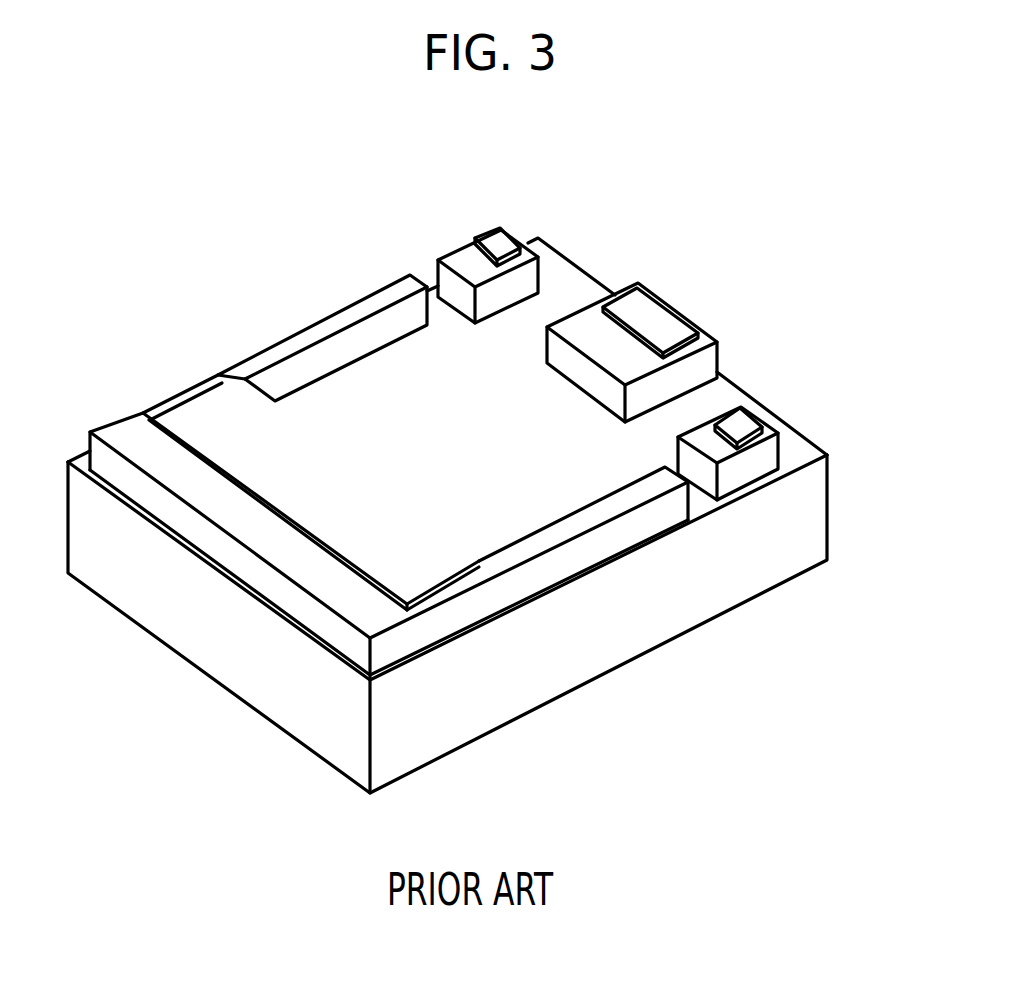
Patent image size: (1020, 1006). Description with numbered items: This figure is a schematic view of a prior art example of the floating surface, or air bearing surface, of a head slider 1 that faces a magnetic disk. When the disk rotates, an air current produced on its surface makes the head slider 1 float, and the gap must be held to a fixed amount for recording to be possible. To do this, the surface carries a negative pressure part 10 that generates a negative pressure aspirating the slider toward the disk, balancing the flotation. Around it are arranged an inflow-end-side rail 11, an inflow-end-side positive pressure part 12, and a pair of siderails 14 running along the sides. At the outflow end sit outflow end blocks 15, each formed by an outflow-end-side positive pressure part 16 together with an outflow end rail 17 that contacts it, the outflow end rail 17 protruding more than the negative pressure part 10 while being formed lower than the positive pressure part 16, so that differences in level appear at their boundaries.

The head slider 1 is at (842, 437).
The negative pressure part 10 is at (475, 463).
The inflow-end-side rail 11 is at (132, 438).
The inflow-end-side positive pressure part 12 is at (479, 565).
The siderails 14 is at (297, 333).
The outflow end block 15 is at (535, 240).
The outflow-end-side positive pressure part 16 is at (490, 230).
The outflow end rails 17 is at (467, 265).